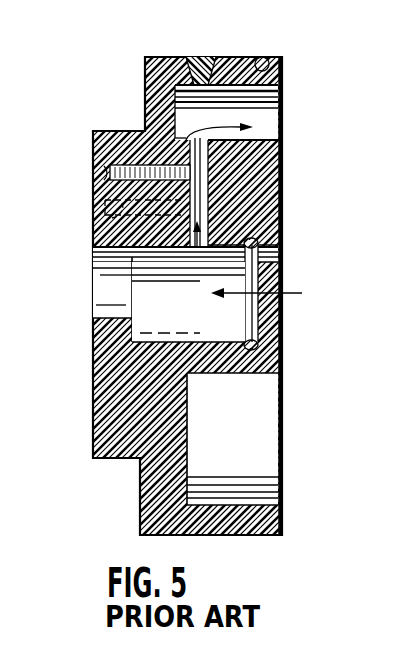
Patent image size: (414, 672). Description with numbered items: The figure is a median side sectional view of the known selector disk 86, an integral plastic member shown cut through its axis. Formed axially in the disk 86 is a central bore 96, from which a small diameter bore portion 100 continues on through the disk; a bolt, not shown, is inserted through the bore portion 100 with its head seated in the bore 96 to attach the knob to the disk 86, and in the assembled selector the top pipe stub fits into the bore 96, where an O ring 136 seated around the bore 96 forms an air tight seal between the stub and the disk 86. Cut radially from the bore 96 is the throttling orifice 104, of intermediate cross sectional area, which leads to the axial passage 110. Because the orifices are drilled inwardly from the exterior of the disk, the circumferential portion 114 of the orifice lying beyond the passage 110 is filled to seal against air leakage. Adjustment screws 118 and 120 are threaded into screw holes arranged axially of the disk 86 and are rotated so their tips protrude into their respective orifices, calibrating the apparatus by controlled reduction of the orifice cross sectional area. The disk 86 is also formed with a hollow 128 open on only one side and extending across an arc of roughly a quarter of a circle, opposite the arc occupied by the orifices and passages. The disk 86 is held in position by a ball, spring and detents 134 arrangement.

The disk 86 is at (145, 58).
The circumferential portion 114 is at (193, 56).
The detents 134 is at (256, 56).
The adjustment screw 118 is at (127, 130).
The axial passage 110 is at (283, 113).
The throttling orifice 104 is at (283, 158).
The O ring 136 is at (262, 249).
The adjustment screw 120 is at (92, 237).
The small diameter bore portion 100 is at (104, 288).
The central bore 96 is at (222, 317).
The hollow 128 is at (242, 437).